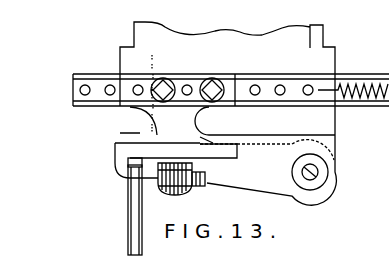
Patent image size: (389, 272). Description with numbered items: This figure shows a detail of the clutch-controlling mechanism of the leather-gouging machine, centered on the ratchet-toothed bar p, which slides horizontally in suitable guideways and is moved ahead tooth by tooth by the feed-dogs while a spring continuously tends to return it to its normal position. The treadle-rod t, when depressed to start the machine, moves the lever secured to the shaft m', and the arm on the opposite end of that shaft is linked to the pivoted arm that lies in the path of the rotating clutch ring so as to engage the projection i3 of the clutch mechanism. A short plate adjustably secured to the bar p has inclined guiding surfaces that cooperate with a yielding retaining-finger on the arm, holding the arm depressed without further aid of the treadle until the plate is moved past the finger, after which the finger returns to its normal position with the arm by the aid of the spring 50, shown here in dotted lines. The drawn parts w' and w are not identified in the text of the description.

The ratchet-toothed bar p is at (98, 74).
The spring 50 is at (160, 65).
The upper lever arm w' is at (260, 121).
The projection of the clutch mechanism i3 is at (345, 0).
The treadle-rod t is at (128, 202).
The ratchet wheel w is at (181, 191).
The shaft m' is at (268, 172).